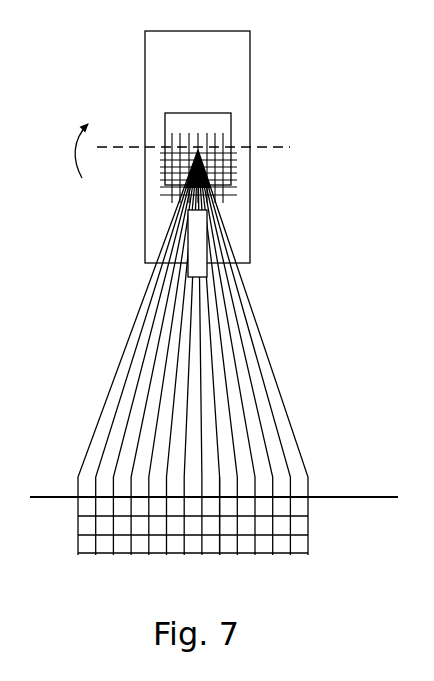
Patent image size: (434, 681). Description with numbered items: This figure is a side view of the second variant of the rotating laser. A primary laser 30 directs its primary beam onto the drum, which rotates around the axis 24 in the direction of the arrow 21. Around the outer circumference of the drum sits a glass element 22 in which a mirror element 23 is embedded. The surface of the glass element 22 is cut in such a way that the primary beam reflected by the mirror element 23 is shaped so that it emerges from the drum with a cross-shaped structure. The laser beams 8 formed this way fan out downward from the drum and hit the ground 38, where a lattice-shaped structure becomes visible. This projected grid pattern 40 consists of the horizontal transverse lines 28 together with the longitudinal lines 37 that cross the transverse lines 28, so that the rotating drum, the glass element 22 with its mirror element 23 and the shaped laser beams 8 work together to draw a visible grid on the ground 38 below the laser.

The laser beams 8 is at (271, 362).
The arrow 21 is at (72, 147).
The glass element 22 is at (228, 58).
The mirror element 23 is at (222, 121).
The axis 24 is at (290, 147).
The transverse lines 28 is at (176, 554).
The primary laser 30 is at (200, 228).
The longitudinal lines 37 is at (220, 554).
The ground 38 is at (214, 529).
The grid pattern 40 is at (106, 565).